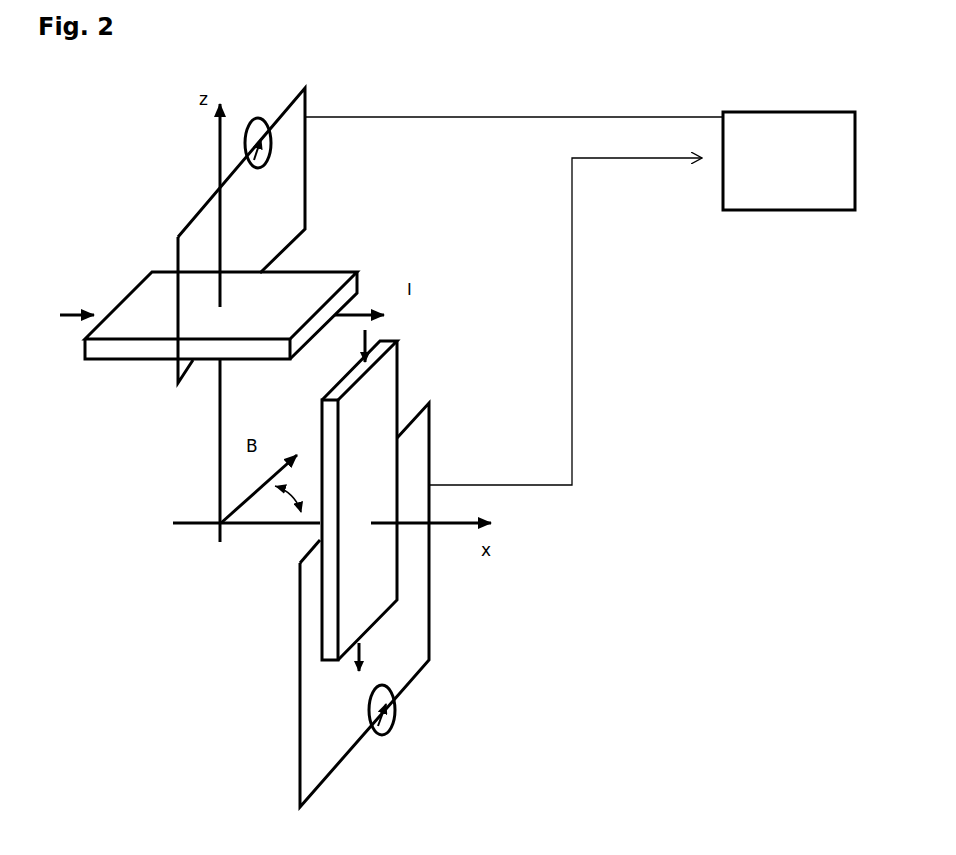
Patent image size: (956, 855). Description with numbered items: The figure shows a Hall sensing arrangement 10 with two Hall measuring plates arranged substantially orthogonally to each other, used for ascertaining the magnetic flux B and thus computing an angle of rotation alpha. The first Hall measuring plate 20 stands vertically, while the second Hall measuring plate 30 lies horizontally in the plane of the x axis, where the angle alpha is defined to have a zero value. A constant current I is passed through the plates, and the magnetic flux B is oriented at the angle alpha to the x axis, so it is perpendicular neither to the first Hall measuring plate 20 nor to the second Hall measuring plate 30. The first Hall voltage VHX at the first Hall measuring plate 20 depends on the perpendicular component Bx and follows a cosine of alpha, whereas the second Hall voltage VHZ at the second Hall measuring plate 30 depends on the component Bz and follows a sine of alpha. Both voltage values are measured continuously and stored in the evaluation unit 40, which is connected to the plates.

The magnetic field sensor device 10 is at (521, 328).
The first Hall measuring plate 20 is at (343, 568).
The second Hall measuring plate 30 is at (404, 235).
The evaluation unit 40 is at (789, 161).